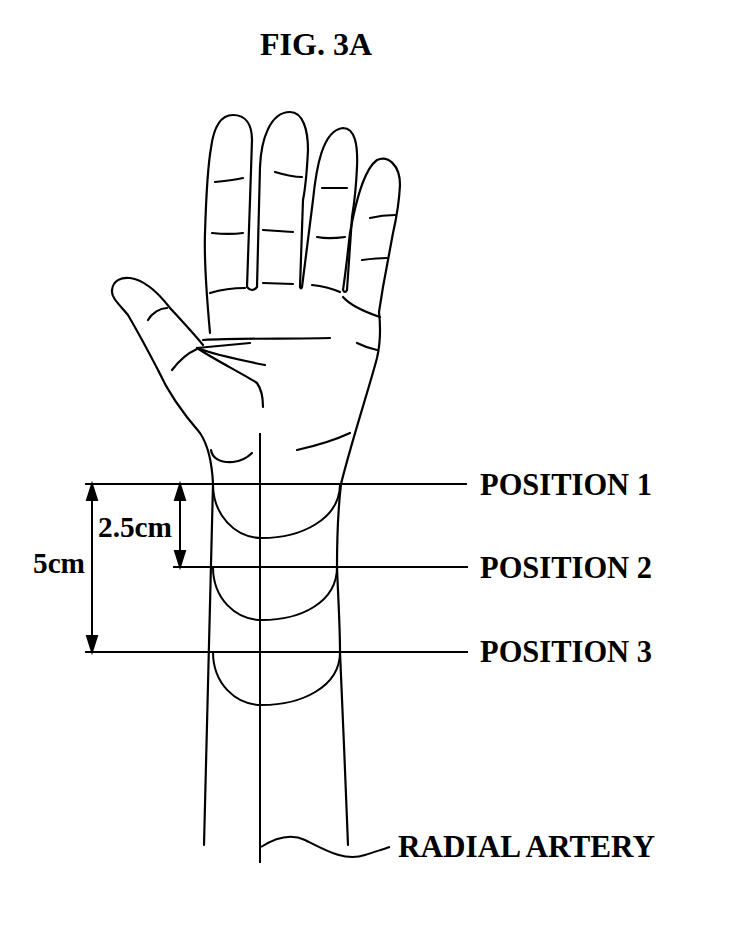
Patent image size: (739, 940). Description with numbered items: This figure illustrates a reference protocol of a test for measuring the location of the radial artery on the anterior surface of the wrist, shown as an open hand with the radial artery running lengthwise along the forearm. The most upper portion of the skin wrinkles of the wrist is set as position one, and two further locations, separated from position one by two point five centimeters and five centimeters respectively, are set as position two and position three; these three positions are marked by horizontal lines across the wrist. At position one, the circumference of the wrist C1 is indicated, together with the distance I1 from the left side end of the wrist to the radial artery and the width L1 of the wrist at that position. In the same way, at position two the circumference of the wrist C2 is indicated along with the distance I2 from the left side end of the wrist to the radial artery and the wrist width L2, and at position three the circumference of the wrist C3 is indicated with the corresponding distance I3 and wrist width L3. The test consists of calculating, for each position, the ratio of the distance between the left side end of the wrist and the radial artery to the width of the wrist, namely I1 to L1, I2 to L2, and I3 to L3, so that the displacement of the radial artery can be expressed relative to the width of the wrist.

The circumference of the wrist in position 1 C1 is at (276, 501).
The distance from left side end of the wrist to the radial artery in position 1 I1 is at (237, 511).
The width of the wrist in position 1 L1 is at (301, 520).
The circumference of the wrist in position 2 C2 is at (320, 584).
The distance from left side end of the wrist to the radial artery in position 2 I2 is at (237, 593).
The width of the wrist in position 2 L2 is at (299, 602).
The circumference of the wrist in position 3 C3 is at (276, 666).
The distance from left side end of the wrist to the radial artery in position 3 I3 is at (237, 678).
The width of the wrist in position 3 L3 is at (301, 687).